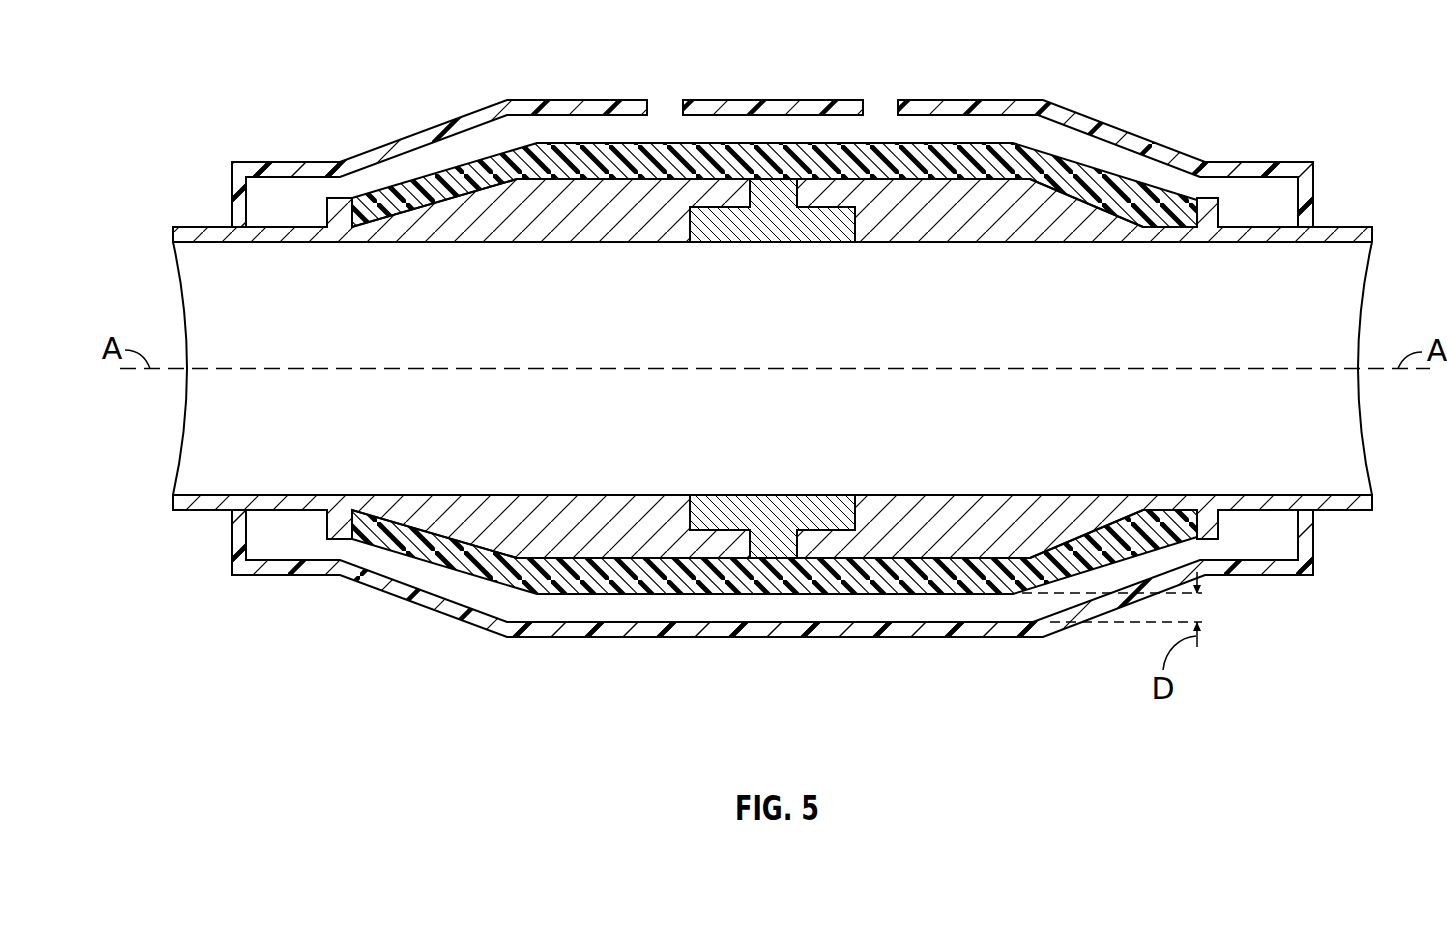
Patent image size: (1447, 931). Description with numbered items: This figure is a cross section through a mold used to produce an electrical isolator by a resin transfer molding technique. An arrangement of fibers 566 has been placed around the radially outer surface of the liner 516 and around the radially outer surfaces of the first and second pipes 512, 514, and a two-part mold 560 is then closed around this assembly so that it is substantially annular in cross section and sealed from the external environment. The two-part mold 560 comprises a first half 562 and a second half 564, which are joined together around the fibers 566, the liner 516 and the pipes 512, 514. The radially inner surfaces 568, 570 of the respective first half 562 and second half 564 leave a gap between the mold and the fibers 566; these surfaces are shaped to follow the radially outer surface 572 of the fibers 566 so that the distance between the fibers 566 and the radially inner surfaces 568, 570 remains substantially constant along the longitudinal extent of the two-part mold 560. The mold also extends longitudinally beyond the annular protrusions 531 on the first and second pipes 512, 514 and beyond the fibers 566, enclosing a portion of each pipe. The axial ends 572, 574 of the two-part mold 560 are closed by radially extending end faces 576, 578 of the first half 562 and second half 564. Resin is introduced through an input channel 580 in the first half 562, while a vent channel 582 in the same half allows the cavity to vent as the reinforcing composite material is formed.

The first pipe 512 is at (196, 511).
The second pipe 514 is at (1348, 511).
The liner 516 is at (788, 496).
The annular protrusions 531 is at (337, 532).
The two-part mold 560 is at (1133, 137).
The first half 562 is at (290, 160).
The second half 564 is at (420, 610).
The fibers 566 is at (930, 155).
The radially inner surface 568 is at (770, 118).
The radially inner surface 570 is at (790, 622).
The radially outer surface of the fibers 572 is at (236, 162).
The axial end 574 is at (1313, 162).
The radially extending end face 576 is at (232, 188).
The radially extending end face 578 is at (230, 552).
The input channel 580 is at (885, 106).
The vent channel 582 is at (666, 106).